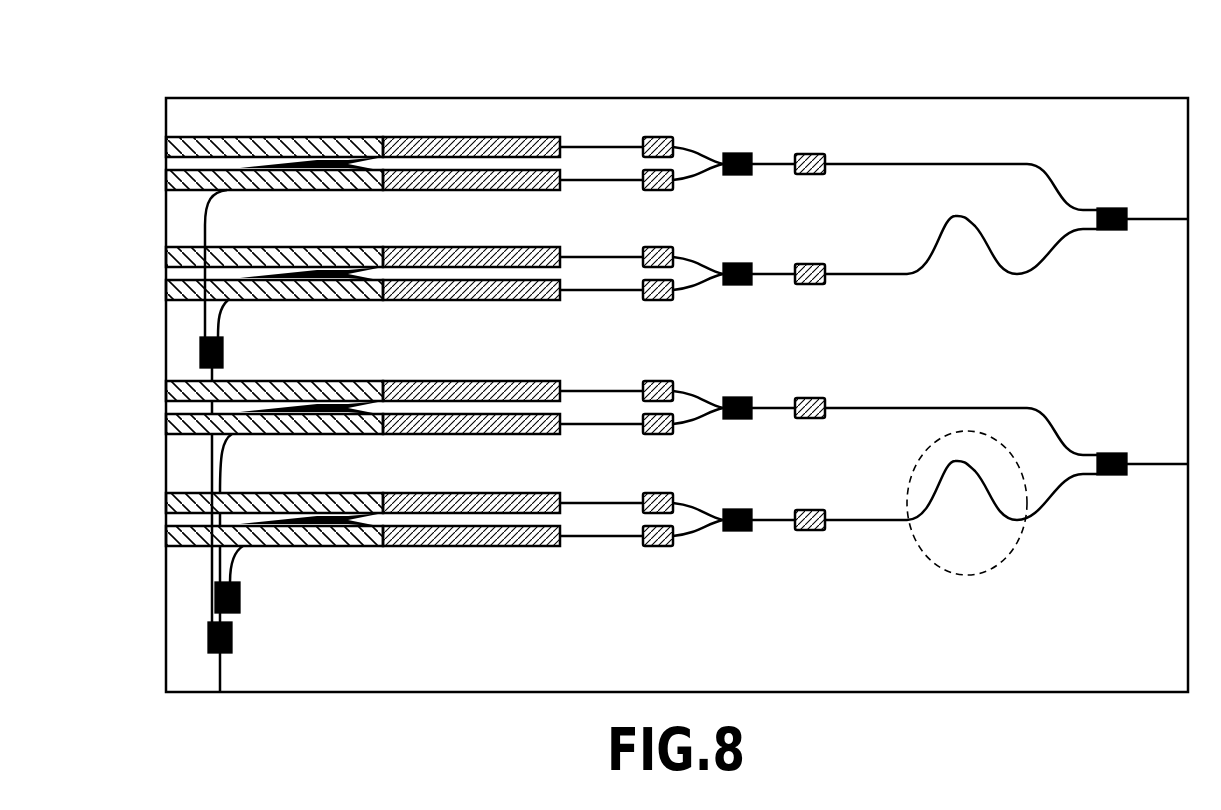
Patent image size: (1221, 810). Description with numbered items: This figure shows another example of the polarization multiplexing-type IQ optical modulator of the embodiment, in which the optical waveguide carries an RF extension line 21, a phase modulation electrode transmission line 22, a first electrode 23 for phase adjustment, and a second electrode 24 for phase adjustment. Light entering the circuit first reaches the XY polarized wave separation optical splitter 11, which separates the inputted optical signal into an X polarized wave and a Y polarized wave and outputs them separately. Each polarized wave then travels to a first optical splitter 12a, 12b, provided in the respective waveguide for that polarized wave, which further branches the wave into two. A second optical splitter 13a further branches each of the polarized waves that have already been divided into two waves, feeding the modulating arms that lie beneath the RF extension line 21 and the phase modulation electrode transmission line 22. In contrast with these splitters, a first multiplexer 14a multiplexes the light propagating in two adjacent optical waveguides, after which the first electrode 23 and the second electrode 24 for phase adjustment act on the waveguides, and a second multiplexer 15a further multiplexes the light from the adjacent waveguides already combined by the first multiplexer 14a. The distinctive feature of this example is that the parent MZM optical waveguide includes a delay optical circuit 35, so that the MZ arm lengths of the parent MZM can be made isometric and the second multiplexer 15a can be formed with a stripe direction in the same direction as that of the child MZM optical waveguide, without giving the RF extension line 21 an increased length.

The XY polarized wave separation optical splitter 11 is at (213, 640).
The first optical splitter 12a is at (205, 350).
The first optical splitter 12b is at (228, 596).
The second optical splitter 13a is at (336, 162).
The first multiplexer 14a is at (740, 160).
The second multiplexer 15a is at (1113, 220).
The RF extension line 21 is at (243, 145).
The phase modulation electrode transmission line 22 is at (472, 145).
The first electrode for phase adjustment 23 is at (663, 145).
The second electrode for phase adjustment 24 is at (815, 158).
The delay optical circuit 35 is at (964, 259).